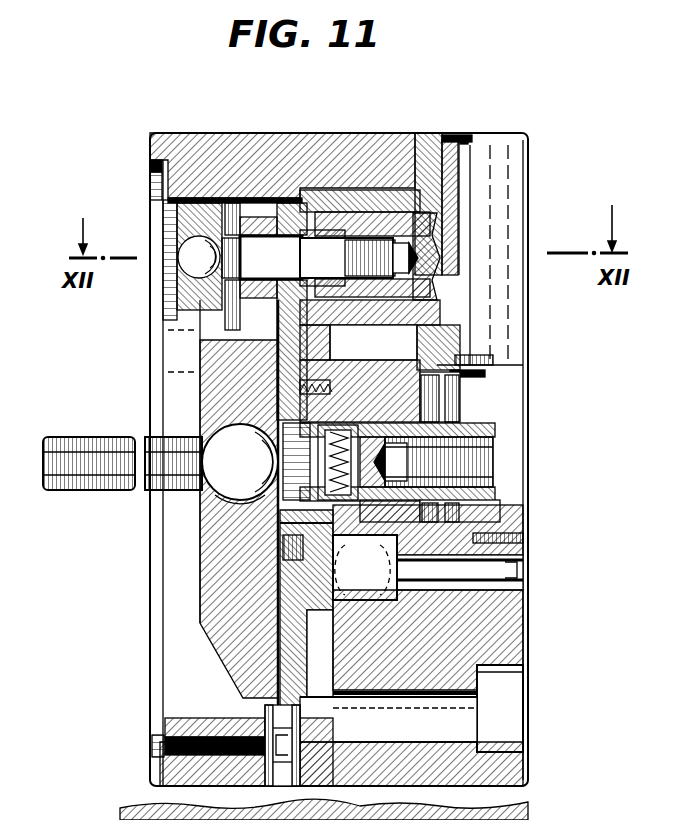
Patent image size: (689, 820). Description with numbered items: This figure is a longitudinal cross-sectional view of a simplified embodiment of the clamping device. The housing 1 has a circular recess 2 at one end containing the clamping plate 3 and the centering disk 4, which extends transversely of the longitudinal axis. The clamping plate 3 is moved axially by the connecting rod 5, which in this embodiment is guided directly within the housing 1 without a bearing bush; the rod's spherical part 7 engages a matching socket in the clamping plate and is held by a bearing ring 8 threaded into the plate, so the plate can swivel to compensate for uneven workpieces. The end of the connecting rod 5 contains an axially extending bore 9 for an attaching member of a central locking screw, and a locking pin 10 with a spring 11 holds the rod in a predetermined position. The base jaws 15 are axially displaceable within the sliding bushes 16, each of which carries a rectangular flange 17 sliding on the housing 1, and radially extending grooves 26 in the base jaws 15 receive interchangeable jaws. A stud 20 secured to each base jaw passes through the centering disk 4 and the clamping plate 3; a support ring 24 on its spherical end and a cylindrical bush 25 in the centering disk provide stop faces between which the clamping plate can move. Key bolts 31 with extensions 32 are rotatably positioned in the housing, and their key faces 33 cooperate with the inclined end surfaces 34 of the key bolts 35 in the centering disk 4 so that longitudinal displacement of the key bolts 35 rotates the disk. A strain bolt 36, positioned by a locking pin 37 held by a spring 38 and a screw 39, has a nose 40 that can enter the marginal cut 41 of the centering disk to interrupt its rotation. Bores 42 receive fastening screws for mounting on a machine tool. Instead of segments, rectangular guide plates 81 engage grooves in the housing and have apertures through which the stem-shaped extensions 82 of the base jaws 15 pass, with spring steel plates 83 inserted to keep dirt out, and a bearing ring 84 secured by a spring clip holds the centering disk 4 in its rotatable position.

The housing 1 is at (172, 140).
The circular recess 2 is at (168, 362).
The clamping plate 3 is at (200, 573).
The centering disk 4 is at (292, 322).
The connecting rod 5 is at (47, 463).
The spherical part 7 is at (212, 425).
The bearing ring 8 is at (465, 408).
The axially extending bore 9 is at (495, 470).
The locking pin 10 is at (392, 373).
The spring 11 is at (355, 495).
The base jaws 15 is at (512, 287).
The sliding bushes 16 is at (365, 190).
The rectangular flange 17 is at (424, 133).
The stud 20 is at (178, 272).
The support ring 24 is at (212, 200).
The cylindrical bush 25 is at (292, 200).
The radially extending grooves 26 is at (525, 215).
The key bolt 31 is at (412, 532).
The extension 32 is at (523, 560).
The key face 33 is at (428, 641).
The inclined end surfaces 34 is at (397, 605).
The key bolts 35 is at (280, 385).
The strain bolt 36 is at (341, 752).
The locking pin 37 is at (240, 735).
The spring 38 is at (190, 787).
The screw 39 is at (168, 740).
The nose 40 is at (285, 613).
The marginal cut 41 is at (335, 705).
The bores 42 is at (512, 703).
The guide plates 81 is at (452, 167).
The stem-shaped extensions 82 is at (380, 335).
The spring steel plates 83 is at (478, 133).
The bearing ring 84 is at (283, 548).